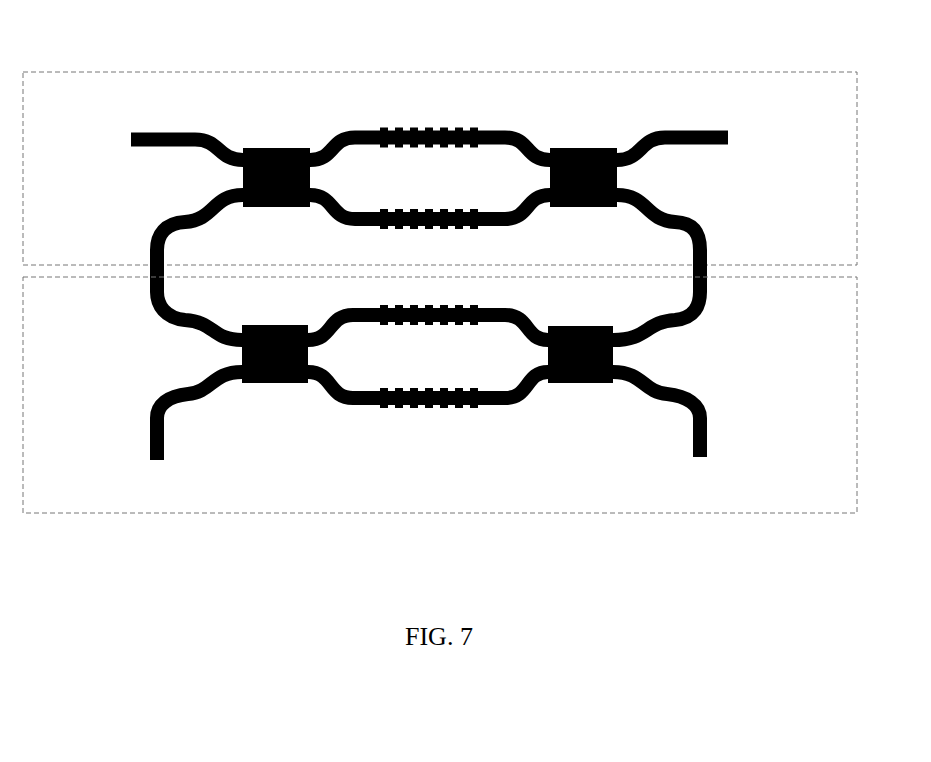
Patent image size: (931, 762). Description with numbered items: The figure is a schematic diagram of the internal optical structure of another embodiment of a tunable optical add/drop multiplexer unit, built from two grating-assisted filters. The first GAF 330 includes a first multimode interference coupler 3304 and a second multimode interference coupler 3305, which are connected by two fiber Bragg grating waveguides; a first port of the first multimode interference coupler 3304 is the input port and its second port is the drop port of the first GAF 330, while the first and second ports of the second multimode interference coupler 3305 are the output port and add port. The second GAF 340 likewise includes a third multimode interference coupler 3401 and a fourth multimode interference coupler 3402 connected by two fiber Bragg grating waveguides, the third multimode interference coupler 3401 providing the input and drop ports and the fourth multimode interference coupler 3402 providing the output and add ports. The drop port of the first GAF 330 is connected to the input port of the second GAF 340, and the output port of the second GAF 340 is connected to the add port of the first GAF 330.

The first GAF 330 is at (371, 71).
The second GAF 340 is at (380, 514).
The first multimode interference coupler 3304 is at (263, 148).
The second multimode interference coupler 3305 is at (562, 148).
The third multimode interference coupler 3401 is at (262, 324).
The fourth multimode interference coupler 3402 is at (567, 325).